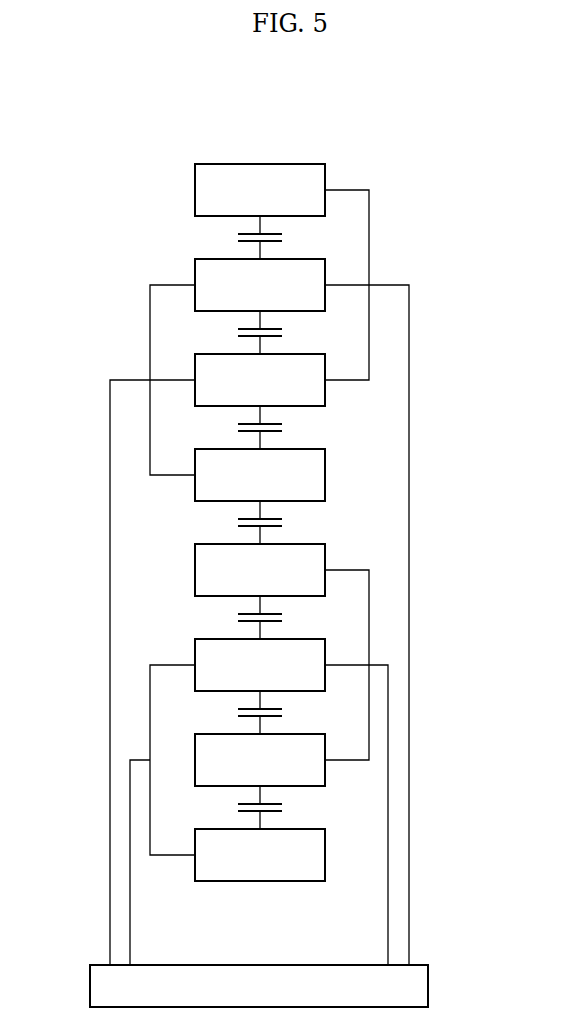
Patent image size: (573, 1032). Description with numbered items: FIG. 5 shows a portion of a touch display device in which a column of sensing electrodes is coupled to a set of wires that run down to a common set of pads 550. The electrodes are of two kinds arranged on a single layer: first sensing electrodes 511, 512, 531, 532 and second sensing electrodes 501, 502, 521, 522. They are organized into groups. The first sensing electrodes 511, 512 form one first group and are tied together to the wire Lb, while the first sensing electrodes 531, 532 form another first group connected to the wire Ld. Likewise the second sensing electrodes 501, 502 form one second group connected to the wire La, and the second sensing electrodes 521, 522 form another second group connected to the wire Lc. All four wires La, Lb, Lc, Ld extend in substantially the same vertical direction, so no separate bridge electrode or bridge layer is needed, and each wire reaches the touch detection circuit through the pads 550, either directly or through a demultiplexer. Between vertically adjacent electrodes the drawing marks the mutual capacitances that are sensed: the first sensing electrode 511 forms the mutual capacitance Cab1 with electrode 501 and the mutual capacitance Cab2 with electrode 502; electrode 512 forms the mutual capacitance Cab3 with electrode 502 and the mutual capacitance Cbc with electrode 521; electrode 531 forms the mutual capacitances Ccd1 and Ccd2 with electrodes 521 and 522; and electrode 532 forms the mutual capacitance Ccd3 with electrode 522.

The second sensing electrode 501 is at (260, 190).
The second sensing electrode 502 is at (260, 380).
The first sensing electrode 511 is at (260, 285).
The first sensing electrode 512 is at (260, 475).
The second sensing electrode 521 is at (260, 570).
The second sensing electrode 522 is at (260, 760).
The first sensing electrode 531 is at (260, 665).
The first sensing electrode 532 is at (260, 855).
The mutual capacitance Cab1 is at (288, 237).
The mutual capacitance Cab2 is at (288, 332).
The mutual capacitance Cab3 is at (288, 427).
The mutual capacitance Cbc is at (283, 522).
The mutual capacitance Ccd1 is at (288, 617).
The mutual capacitance Ccd2 is at (288, 712).
The mutual capacitance Ccd3 is at (288, 807).
The wire La is at (410, 413).
The wire Lb is at (110, 505).
The wire Lc is at (388, 792).
The wire Ld is at (130, 797).
The pads 550 is at (429, 985).